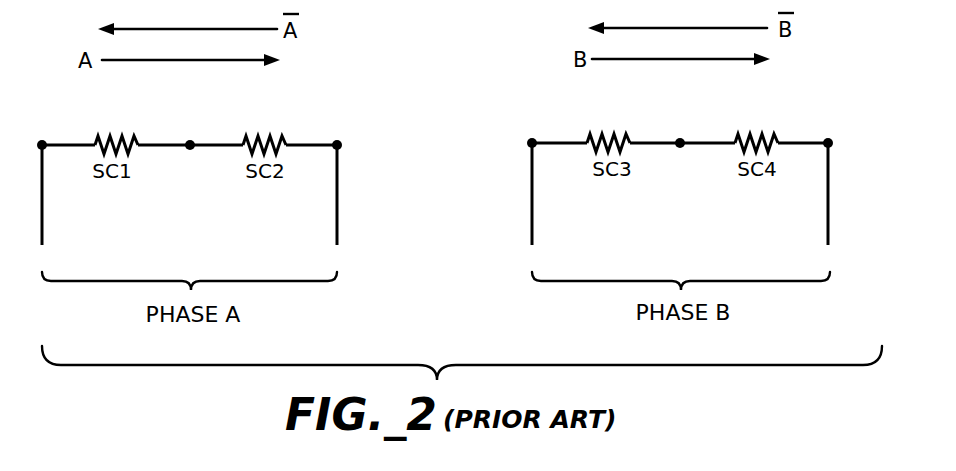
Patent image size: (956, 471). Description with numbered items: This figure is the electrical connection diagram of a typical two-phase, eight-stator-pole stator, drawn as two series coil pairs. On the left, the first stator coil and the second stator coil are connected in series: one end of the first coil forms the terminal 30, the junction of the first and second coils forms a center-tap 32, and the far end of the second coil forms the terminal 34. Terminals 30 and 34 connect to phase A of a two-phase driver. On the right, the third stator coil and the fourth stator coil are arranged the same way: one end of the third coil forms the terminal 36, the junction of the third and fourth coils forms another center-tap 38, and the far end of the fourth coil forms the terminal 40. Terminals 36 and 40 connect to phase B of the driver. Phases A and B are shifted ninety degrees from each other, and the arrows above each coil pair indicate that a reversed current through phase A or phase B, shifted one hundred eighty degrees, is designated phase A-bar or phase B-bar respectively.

The terminal 30 is at (43, 136).
The center-tap 32 is at (191, 136).
The terminal 34 is at (338, 137).
The terminal 36 is at (533, 134).
The center-tap 38 is at (681, 134).
The terminal 40 is at (829, 135).